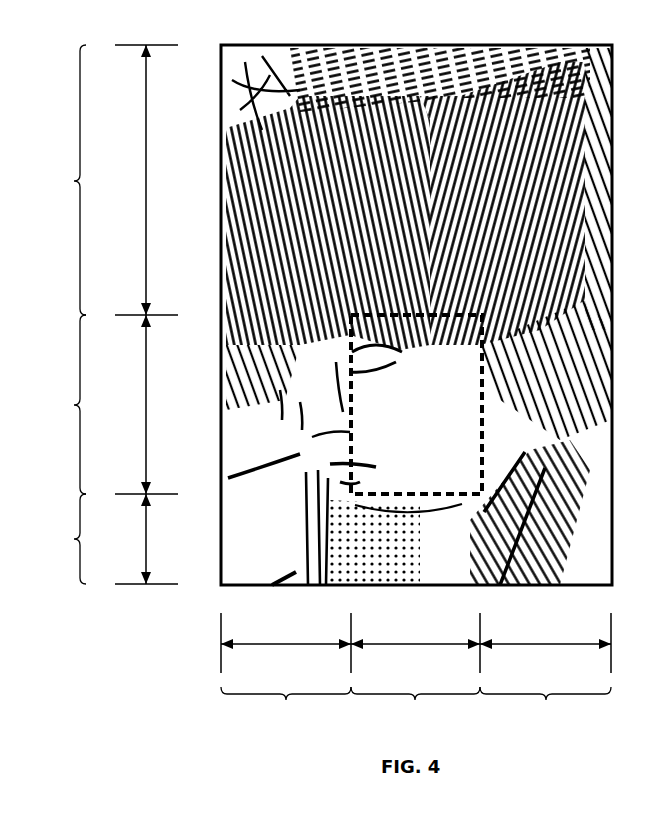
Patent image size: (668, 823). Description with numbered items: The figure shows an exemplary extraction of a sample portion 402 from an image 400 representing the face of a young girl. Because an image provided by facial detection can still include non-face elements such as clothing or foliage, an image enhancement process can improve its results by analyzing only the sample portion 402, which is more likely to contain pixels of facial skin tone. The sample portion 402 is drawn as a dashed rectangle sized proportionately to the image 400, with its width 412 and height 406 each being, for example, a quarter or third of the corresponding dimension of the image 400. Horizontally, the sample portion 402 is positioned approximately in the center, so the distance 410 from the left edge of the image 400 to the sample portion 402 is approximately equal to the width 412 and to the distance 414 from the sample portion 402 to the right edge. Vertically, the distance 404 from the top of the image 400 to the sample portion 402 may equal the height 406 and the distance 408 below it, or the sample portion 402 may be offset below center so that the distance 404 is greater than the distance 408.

The image 400 is at (268, 45).
The sample portion 402 is at (488, 441).
The distance from top edge of image to top edge of sample portion 404 is at (111, 180).
The height of sample portion 406 is at (111, 404).
The distance from bottom edge of sample portion to bottom edge of image 408 is at (111, 539).
The distance from left edge of image to left edge of sample portion 410 is at (286, 671).
The width of sample portion 412 is at (415, 671).
The distance from right edge of sample portion to right edge of image 414 is at (545, 671).